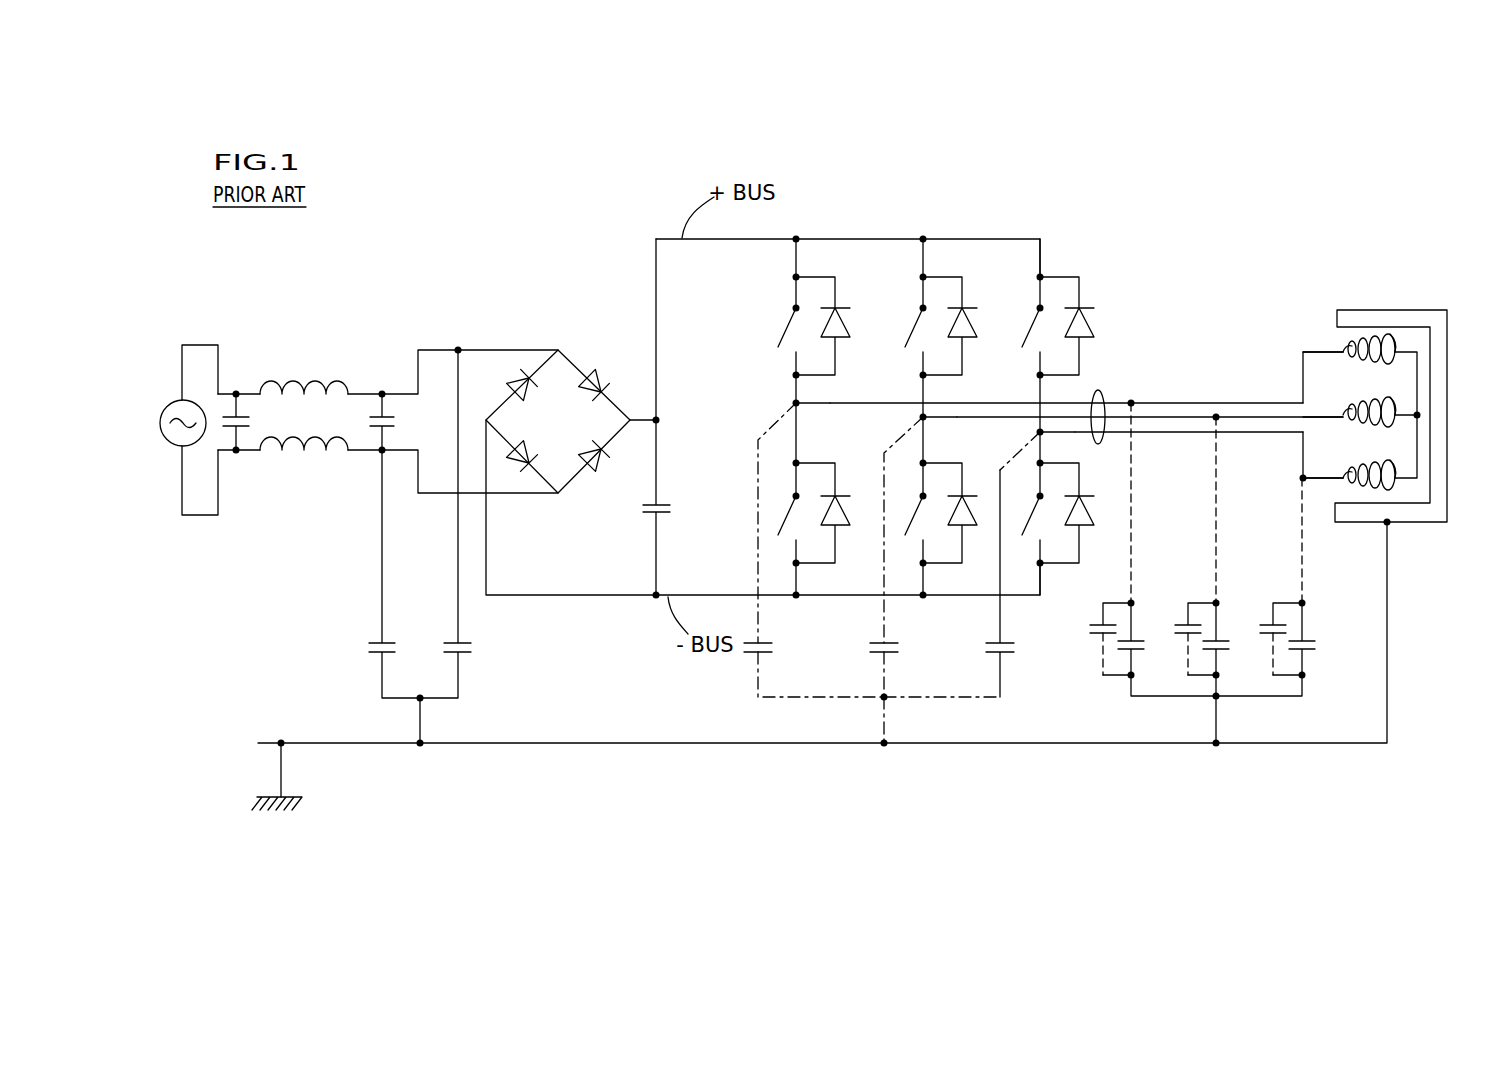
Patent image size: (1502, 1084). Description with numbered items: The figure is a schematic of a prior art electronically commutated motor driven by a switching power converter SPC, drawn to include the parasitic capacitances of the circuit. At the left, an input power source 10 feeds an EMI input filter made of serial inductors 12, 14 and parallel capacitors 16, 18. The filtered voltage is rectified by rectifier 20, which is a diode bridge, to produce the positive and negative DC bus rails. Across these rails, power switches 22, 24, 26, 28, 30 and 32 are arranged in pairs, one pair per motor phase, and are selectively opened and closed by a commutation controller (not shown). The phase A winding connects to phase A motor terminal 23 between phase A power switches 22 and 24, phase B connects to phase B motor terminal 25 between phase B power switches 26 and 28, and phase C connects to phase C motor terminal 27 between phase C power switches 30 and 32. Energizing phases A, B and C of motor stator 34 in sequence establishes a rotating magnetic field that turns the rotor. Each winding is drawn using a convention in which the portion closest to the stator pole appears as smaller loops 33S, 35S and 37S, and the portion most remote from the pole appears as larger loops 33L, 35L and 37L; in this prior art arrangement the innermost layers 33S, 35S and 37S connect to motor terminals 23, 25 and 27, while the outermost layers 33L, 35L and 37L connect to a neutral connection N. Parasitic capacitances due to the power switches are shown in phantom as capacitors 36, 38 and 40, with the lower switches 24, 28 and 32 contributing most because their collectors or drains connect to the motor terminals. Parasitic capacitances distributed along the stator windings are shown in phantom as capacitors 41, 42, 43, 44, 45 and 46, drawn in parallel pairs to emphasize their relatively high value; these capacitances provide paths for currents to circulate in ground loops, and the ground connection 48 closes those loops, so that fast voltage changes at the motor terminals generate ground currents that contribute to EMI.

The input power source 10 is at (192, 447).
The serial inductor 12 is at (291, 378).
The serial inductor 14 is at (303, 442).
The parallel capacitor 16 is at (245, 426).
The parallel capacitor 18 is at (374, 405).
The rectifier 20 is at (568, 359).
The phase A power switch 22 is at (787, 331).
The phase A motor terminal 23 is at (798, 405).
The phase A power switch 24 is at (788, 513).
The phase B motor terminal 25 is at (925, 420).
The phase B power switch 26 is at (913, 336).
The phase C motor terminal 27 is at (1042, 434).
The phase B power switch 28 is at (913, 511).
The phase C power switch 30 is at (1030, 331).
The phase C power switch 32 is at (1030, 513).
The motor stator 34 is at (1357, 310).
The innermost winding layer 33S is at (1343, 351).
The outermost winding layer 33L is at (1395, 343).
The innermost winding layer 35S is at (1343, 415).
The outermost winding layer 35L is at (1398, 411).
The innermost winding layer 37S is at (1343, 477).
The outermost winding layer 37L is at (1396, 479).
The parasitic capacitance of power switch 36 is at (758, 630).
The parasitic capacitance of power switch 38 is at (884, 622).
The parasitic capacitance of power switch 40 is at (1000, 665).
The parasitic capacitance 41 is at (1100, 644).
The parasitic capacitance 42 is at (1133, 660).
The parasitic capacitance 43 is at (1185, 619).
The parasitic capacitance 44 is at (1220, 660).
The parasitic capacitance 45 is at (1270, 613).
The parasitic capacitance 46 is at (1303, 665).
The ground 48 is at (301, 797).
The phase A is at (1318, 352).
The phase B is at (1338, 417).
The phase C is at (1316, 478).
The neutral connection N is at (1419, 415).
The switching power converter SPC is at (988, 226).